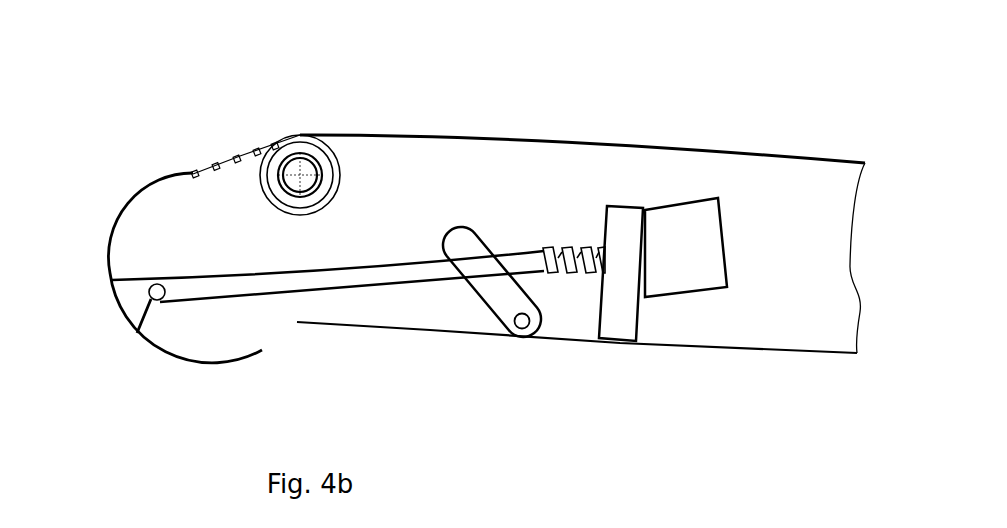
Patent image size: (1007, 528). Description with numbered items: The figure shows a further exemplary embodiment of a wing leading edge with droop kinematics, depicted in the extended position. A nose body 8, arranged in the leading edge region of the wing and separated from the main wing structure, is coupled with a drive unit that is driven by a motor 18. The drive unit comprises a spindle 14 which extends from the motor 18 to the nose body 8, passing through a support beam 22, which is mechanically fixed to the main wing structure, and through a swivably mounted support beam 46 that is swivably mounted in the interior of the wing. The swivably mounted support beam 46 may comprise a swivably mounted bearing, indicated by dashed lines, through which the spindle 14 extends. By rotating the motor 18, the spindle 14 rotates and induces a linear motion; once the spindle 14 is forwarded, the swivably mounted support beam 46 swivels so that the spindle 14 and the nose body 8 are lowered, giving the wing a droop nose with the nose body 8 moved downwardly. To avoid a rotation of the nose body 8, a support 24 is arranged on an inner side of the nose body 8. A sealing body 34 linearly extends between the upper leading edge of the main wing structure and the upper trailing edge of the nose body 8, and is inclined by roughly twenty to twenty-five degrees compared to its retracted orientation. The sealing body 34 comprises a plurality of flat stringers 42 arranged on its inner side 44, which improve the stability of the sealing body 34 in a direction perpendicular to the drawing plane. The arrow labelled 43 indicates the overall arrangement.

The nose body 8 is at (157, 195).
The spindle 14 is at (368, 271).
The motor 18 is at (702, 240).
The support beam 22 is at (620, 313).
The support 24 is at (132, 310).
The sealing body 34 is at (226, 162).
The flat stringers 42 is at (197, 175).
The leading edge assembly 43 is at (616, 88).
The inner side 44 is at (227, 183).
The swivably mounted support beam 46 is at (495, 293).